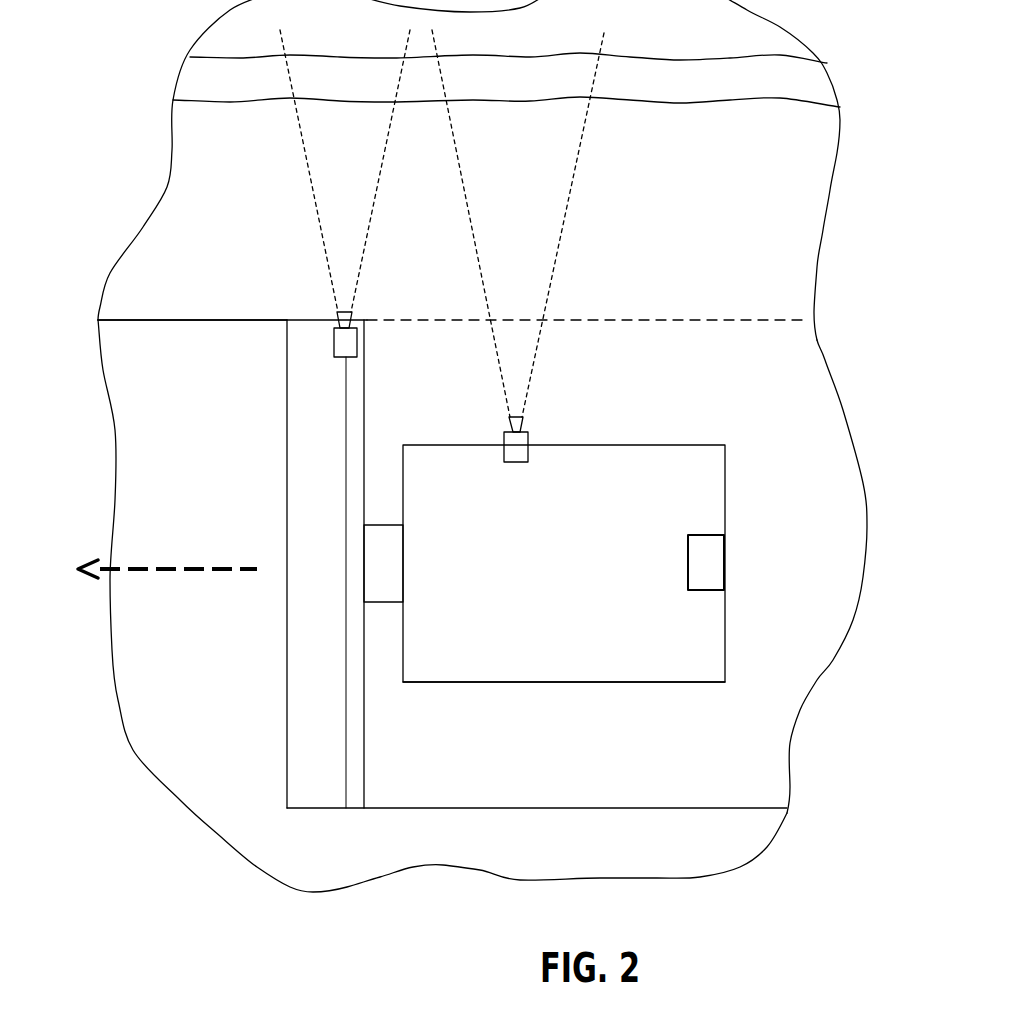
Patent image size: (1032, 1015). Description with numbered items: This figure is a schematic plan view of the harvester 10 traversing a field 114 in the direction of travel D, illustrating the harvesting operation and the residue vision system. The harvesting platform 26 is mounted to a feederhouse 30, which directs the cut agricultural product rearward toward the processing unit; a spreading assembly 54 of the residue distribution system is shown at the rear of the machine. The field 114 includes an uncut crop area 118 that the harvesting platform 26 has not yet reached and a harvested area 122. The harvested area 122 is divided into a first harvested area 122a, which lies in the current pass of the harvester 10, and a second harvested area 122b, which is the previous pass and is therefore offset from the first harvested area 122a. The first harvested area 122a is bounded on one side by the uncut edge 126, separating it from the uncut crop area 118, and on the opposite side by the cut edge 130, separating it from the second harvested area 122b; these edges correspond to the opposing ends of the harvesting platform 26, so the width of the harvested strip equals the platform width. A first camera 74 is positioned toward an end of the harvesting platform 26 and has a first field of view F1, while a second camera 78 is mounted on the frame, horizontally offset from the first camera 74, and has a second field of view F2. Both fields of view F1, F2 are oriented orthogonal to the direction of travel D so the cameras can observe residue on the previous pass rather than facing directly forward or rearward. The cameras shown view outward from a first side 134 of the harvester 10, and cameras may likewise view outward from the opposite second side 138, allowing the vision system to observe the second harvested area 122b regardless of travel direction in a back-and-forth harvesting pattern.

The harvester 10 is at (610, 650).
The harvesting platform 26 is at (313, 770).
The feederhouse 30 is at (385, 580).
The spreading assembly 54 is at (705, 560).
The first camera 74 is at (342, 343).
The second camera 78 is at (520, 443).
The field 114 is at (138, 383).
The uncut crop area 118 is at (182, 680).
The harvested area 122 is at (795, 337).
The first harvested area 122a is at (828, 597).
The second harvested area 122b is at (767, 187).
The uncut edge 126 is at (643, 808).
The cut edge 130 is at (652, 318).
The first side 134 is at (660, 445).
The second side 138 is at (635, 682).
The direction of travel D is at (162, 572).
The first field of view F1 is at (312, 190).
The second field of view F2 is at (568, 195).